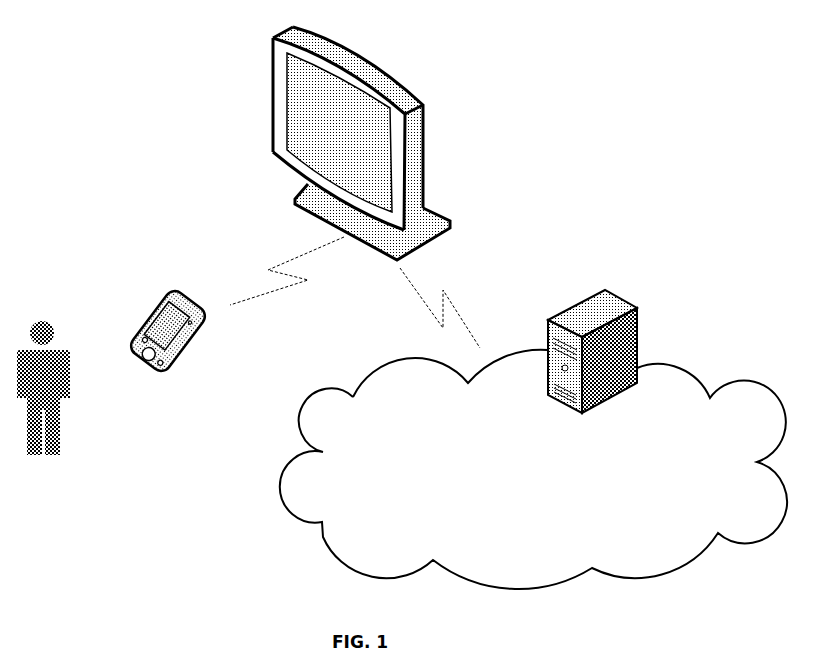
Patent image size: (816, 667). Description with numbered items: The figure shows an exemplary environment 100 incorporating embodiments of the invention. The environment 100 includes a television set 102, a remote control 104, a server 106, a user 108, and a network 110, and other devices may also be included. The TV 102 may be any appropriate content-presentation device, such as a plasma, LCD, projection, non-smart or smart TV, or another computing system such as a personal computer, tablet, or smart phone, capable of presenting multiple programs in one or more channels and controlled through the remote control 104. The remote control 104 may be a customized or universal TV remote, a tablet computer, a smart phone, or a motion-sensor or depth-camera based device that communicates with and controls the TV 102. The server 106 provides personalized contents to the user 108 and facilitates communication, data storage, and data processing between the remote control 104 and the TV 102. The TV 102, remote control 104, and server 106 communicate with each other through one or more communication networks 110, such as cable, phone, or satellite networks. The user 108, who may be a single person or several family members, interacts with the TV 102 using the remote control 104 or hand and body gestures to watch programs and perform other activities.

The environment 100 is at (112, 30).
The television set 102 is at (424, 122).
The remote control 104 is at (190, 355).
The server 106 is at (637, 350).
The user 108 is at (58, 443).
The network 110 is at (390, 452).